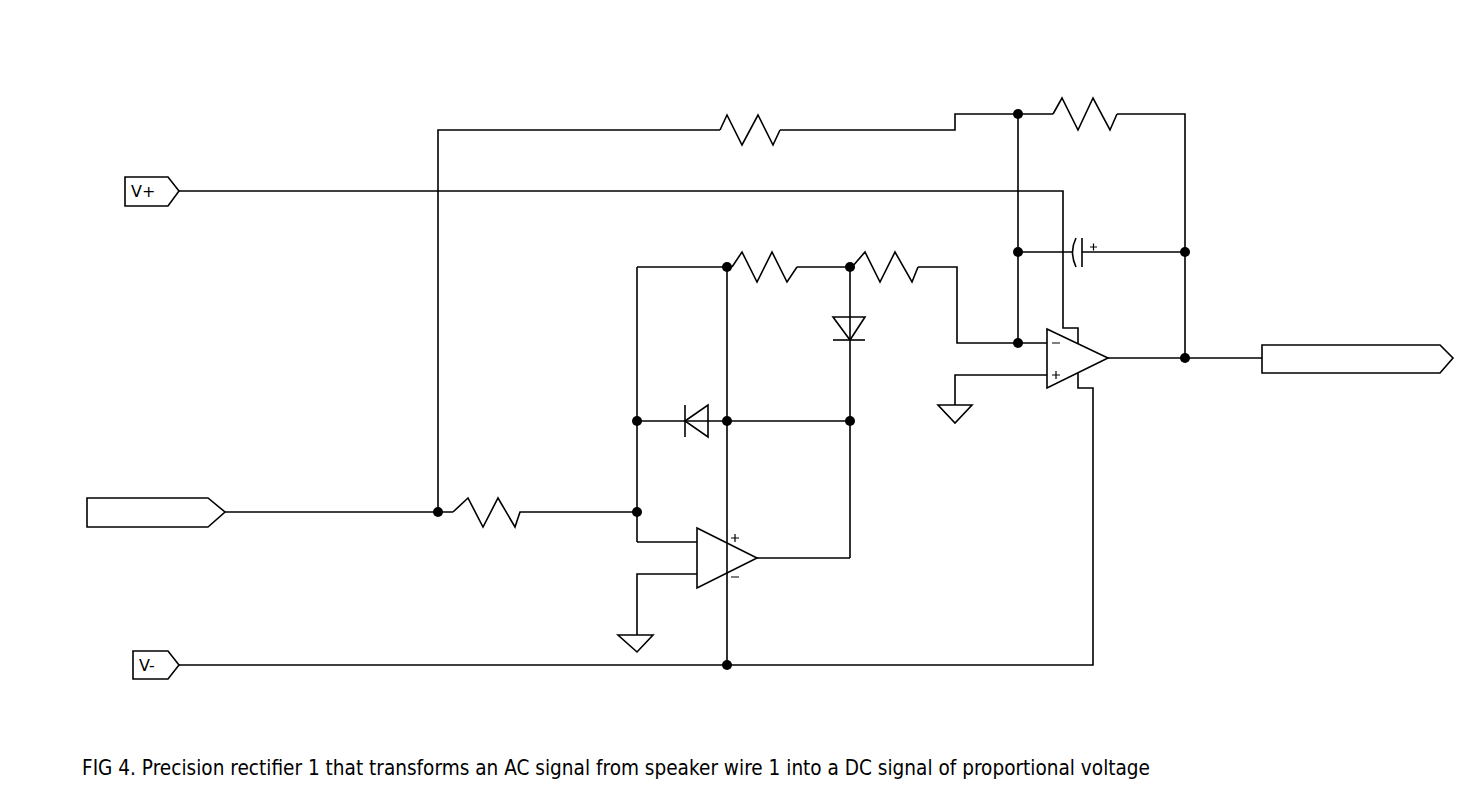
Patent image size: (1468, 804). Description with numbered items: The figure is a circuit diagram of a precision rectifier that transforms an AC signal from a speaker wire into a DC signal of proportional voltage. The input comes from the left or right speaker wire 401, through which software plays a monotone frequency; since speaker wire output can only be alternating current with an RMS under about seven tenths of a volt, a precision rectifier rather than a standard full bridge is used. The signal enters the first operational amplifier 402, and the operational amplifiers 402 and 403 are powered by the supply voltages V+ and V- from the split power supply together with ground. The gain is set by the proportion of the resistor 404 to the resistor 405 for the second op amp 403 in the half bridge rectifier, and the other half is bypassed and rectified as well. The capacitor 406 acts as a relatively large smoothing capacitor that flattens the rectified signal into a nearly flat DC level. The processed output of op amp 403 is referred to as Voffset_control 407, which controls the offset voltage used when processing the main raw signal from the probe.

The speaker wire 1 401 is at (140, 482).
The operational amplifier 402 is at (745, 538).
The operational amplifier 403 is at (1100, 327).
The resistor 404 is at (768, 103).
The resistor 405 is at (1103, 90).
The capacitor 406 is at (1090, 223).
The Voffset_control 407 is at (1352, 342).